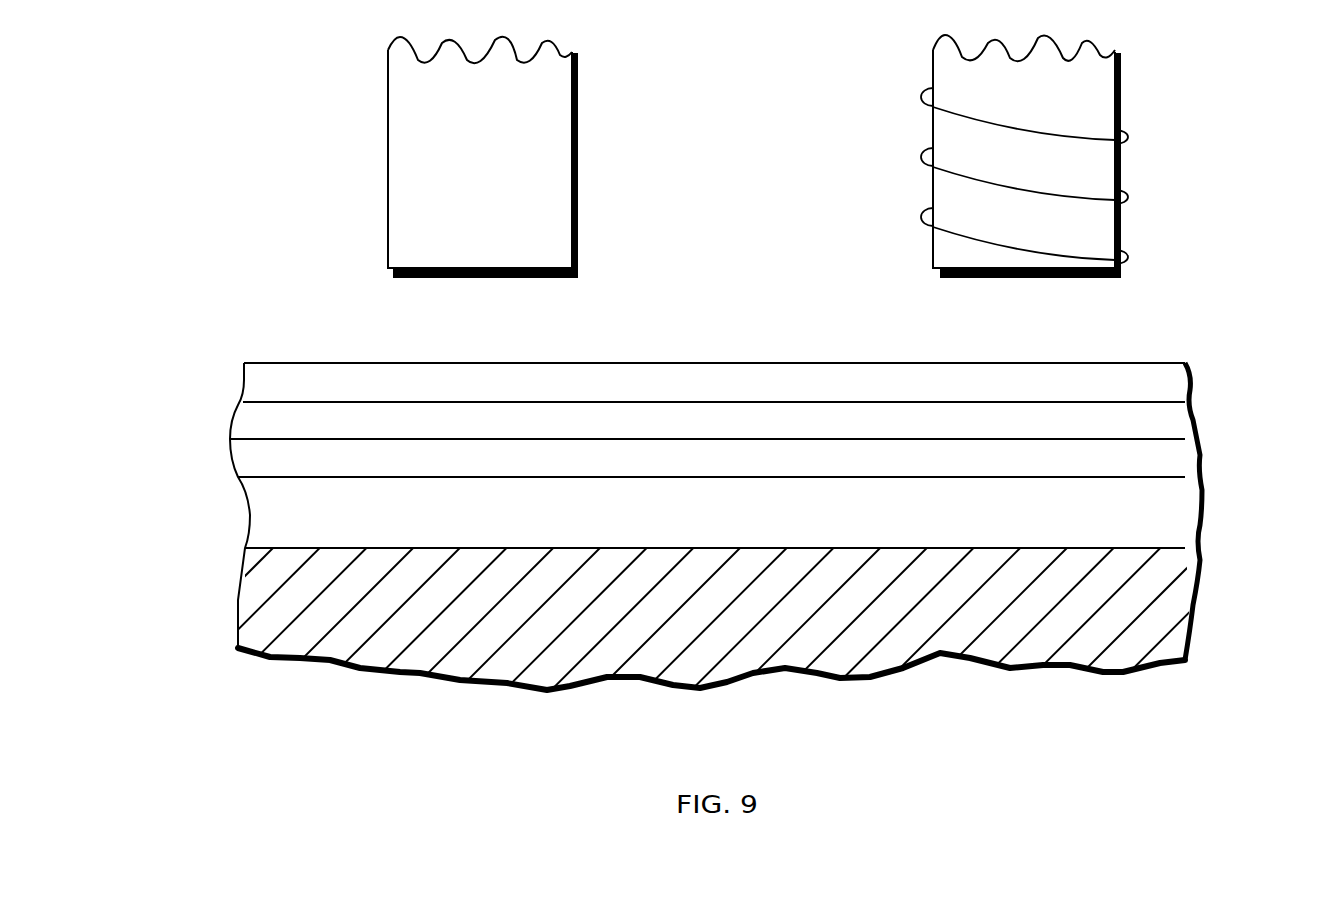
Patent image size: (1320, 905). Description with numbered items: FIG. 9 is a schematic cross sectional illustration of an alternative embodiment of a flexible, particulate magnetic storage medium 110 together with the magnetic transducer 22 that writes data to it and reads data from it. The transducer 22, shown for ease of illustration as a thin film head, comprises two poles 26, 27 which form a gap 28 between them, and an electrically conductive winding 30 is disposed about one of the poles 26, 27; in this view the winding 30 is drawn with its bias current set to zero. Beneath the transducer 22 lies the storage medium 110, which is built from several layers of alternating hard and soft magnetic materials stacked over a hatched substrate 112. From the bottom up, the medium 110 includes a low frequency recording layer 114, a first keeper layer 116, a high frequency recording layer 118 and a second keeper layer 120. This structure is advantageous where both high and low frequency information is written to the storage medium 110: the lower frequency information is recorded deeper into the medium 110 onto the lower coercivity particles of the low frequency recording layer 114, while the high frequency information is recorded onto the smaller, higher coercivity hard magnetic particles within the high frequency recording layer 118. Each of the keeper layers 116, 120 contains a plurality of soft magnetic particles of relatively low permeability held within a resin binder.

The magnetic transducer 22 is at (1140, 92).
The pole 26 is at (407, 278).
The pole 27 is at (1103, 278).
The gap 28 is at (766, 168).
The electrically conductive winding 30 is at (1130, 195).
The flexible, particulate magnetic storage medium 110 is at (676, 521).
The substrate 112 is at (427, 655).
The low frequency recording layer 114 is at (1173, 508).
The first keeper layer 116 is at (1177, 458).
The high frequency recording layer 118 is at (1173, 423).
The second keeper layer 120 is at (1168, 386).